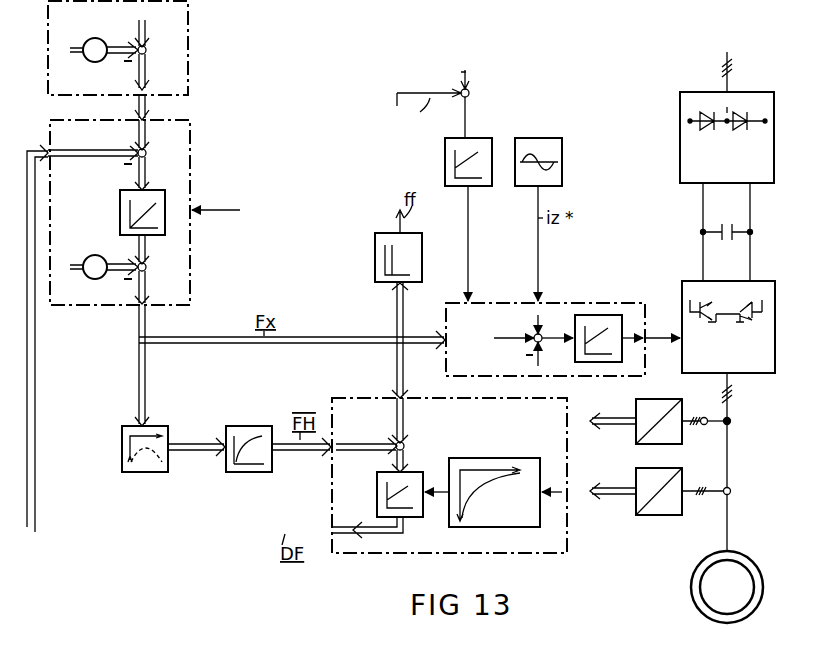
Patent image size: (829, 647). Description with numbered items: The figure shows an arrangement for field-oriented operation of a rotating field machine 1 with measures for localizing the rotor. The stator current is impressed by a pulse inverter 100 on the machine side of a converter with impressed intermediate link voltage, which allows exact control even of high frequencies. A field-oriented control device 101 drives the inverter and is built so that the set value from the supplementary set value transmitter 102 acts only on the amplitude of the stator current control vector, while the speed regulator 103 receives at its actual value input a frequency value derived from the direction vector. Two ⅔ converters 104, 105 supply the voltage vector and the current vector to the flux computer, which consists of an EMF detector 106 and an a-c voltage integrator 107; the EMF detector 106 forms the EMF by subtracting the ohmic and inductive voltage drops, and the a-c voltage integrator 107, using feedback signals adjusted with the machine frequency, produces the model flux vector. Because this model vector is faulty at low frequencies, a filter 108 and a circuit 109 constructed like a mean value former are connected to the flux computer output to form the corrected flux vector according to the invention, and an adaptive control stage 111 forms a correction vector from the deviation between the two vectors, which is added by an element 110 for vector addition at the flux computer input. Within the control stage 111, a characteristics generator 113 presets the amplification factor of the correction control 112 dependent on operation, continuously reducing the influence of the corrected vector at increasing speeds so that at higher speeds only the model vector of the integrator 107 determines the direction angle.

The rotating field machine 1 is at (692, 585).
The pulse inverter 100 is at (744, 374).
The field-oriented control device 101 is at (588, 303).
The supplementary set value transmitter 102 is at (540, 138).
The speed regulator 103 is at (445, 156).
The ⅔ converter 104 is at (645, 398).
The ⅔ converter 105 is at (680, 514).
The EMF detector 106 is at (188, 55).
The a-c voltage integrator 107 is at (190, 190).
The filter 108 is at (143, 473).
The circuit constructed according to the mean value former 109 is at (247, 473).
The element for vector addition 110 is at (146, 153).
The adaptive control stage 111 is at (567, 538).
The correction control 112 is at (377, 494).
The characteristics generator 113 is at (507, 458).